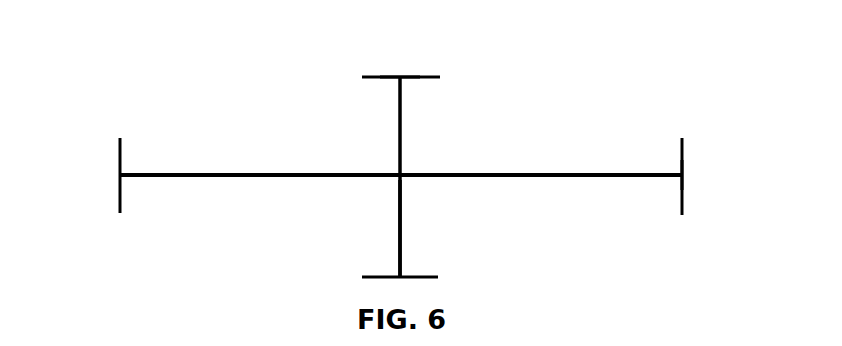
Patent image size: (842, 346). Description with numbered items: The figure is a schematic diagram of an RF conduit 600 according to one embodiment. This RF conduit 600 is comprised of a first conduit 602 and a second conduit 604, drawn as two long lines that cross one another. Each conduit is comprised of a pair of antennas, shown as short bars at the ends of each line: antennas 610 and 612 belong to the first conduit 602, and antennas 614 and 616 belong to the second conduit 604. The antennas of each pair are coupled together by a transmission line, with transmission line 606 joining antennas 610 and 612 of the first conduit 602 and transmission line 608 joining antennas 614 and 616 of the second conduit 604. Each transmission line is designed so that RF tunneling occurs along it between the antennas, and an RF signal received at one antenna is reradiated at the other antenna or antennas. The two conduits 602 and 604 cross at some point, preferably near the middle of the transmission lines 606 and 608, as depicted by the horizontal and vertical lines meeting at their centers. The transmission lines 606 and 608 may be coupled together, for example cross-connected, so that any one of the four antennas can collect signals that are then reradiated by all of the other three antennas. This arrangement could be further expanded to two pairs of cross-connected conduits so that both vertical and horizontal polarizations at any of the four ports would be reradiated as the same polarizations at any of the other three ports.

The RF conduit 600 is at (205, 130).
The first conduit 602 is at (696, 177).
The second conduit 604 is at (397, 64).
The transmission line 606 is at (562, 174).
The transmission line 608 is at (401, 224).
The antenna 610 is at (680, 155).
The antenna 612 is at (118, 161).
The antenna 614 is at (374, 76).
The antenna 616 is at (382, 275).